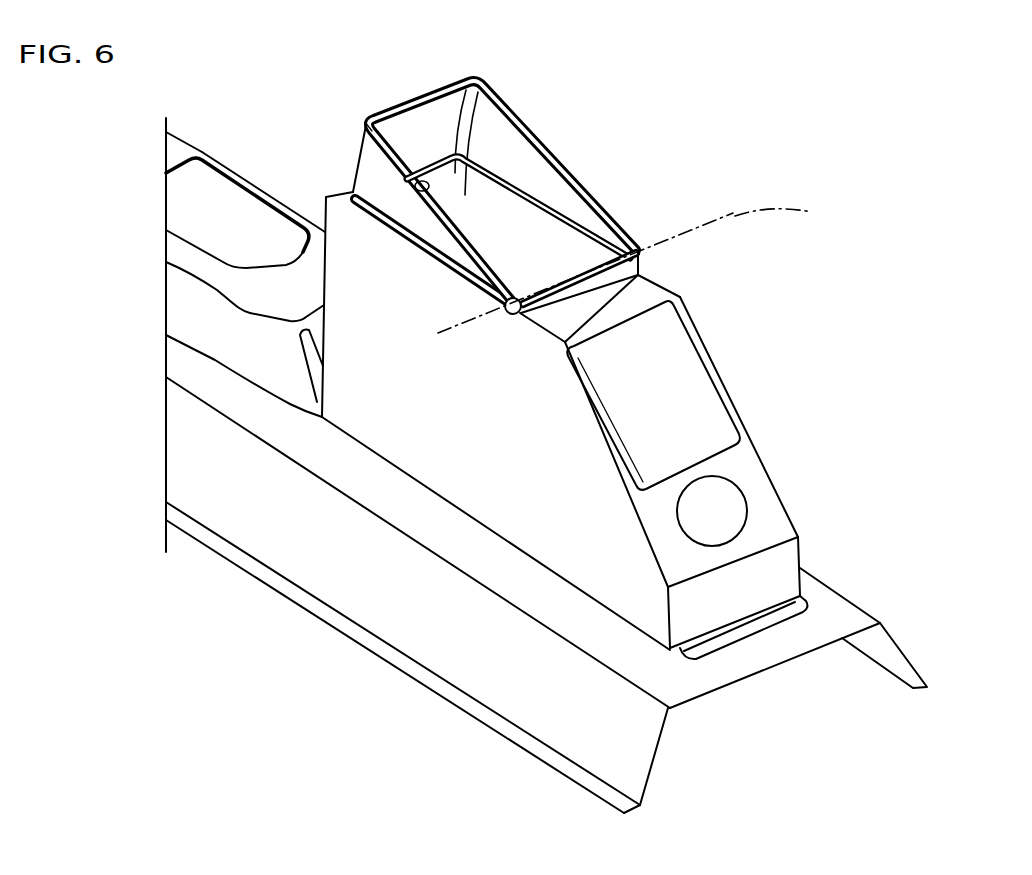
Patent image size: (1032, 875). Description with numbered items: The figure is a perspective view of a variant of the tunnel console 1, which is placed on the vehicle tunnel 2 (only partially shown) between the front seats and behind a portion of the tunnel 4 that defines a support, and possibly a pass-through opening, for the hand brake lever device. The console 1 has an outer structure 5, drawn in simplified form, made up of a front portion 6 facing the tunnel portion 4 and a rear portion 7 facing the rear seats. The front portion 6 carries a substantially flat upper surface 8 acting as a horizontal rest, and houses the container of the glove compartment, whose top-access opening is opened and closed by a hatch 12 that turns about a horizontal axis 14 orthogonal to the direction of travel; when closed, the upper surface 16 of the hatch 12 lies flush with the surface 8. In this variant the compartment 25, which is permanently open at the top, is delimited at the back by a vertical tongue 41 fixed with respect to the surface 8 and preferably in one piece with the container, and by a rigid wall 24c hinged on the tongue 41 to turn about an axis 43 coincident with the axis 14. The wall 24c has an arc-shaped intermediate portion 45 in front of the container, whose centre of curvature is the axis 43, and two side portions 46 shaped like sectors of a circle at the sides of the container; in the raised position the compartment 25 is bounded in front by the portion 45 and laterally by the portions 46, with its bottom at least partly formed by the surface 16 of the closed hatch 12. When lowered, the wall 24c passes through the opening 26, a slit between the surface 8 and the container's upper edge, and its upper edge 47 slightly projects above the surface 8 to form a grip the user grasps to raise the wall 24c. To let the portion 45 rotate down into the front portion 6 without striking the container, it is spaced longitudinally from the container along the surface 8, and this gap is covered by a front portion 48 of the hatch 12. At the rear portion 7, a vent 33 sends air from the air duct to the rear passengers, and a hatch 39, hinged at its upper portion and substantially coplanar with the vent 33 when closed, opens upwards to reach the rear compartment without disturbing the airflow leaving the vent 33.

The tunnel console 1 is at (732, 184).
The tunnel 2 is at (276, 437).
The portion of the tunnel 4 is at (282, 196).
The outer structure 5 is at (682, 290).
The front portion 6 is at (330, 193).
The rear portion 7 is at (778, 527).
The upper surface 8 is at (653, 279).
The hatch 12 is at (624, 247).
The axis 14 is at (773, 212).
The upper surface of the hatch 16 is at (595, 262).
The rigid wall 24c is at (560, 147).
The compartment 25 is at (528, 238).
The opening 26 is at (418, 246).
The vent 33 is at (725, 503).
The hatch 39 is at (690, 370).
The vertical tongue 41 is at (560, 308).
The axis 43 is at (812, 213).
The intermediate portion 45 is at (420, 130).
The side portions 46 is at (352, 178).
The upper edge 47 is at (528, 125).
The front portion of the hatch 48 is at (462, 82).